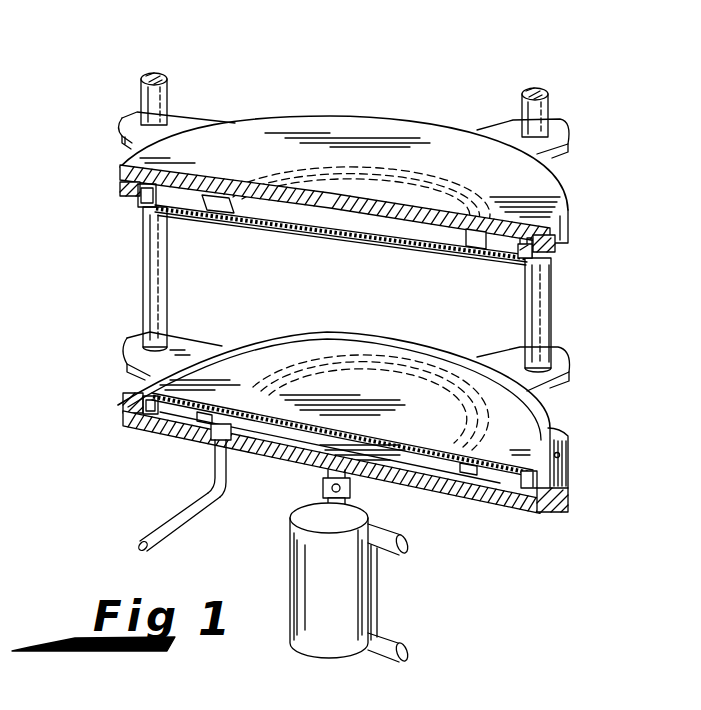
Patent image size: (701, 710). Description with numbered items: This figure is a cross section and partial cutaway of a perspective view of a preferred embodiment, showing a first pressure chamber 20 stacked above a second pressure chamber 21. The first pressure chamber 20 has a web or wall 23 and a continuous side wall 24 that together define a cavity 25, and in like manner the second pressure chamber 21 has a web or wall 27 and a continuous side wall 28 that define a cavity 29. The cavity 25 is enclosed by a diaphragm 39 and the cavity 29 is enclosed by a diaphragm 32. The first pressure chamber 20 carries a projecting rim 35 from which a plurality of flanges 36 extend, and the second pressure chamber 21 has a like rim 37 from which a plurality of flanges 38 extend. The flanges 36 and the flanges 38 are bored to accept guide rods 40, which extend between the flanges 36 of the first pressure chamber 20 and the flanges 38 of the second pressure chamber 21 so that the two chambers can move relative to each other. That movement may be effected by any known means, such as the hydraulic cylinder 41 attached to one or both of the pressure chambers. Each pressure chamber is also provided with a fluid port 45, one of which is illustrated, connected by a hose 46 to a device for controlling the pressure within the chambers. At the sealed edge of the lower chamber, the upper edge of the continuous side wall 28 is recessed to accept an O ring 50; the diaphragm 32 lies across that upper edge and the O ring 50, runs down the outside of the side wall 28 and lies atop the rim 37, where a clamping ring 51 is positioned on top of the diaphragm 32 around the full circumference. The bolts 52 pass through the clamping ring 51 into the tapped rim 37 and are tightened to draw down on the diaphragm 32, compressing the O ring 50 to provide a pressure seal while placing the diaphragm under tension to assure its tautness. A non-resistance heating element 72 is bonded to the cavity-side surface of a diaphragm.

The first pressure chamber 20 is at (460, 84).
The second pressure chamber 21 is at (633, 388).
The web or wall 23 is at (560, 203).
The continuous side wall 24 is at (505, 250).
The cavity 25 is at (290, 222).
The web or wall 27 is at (388, 475).
The continuous side wall 28 is at (507, 490).
The cavity 29 is at (187, 420).
The diaphragm 32 is at (400, 352).
The projecting rim 35 is at (120, 172).
The flanges 36 is at (124, 120).
The rim 37 is at (126, 423).
The flanges 38 is at (127, 348).
The diaphragm 39 is at (346, 240).
The guide rods 40 is at (168, 88).
The hydraulic cylinder 41 is at (296, 564).
The fluid port 45 is at (231, 440).
The hose 46 is at (147, 532).
The O ring 50 is at (141, 202).
The clamping ring 51 is at (126, 190).
The bolts 52 is at (558, 454).
The non-resistance heating element 72 is at (218, 212).